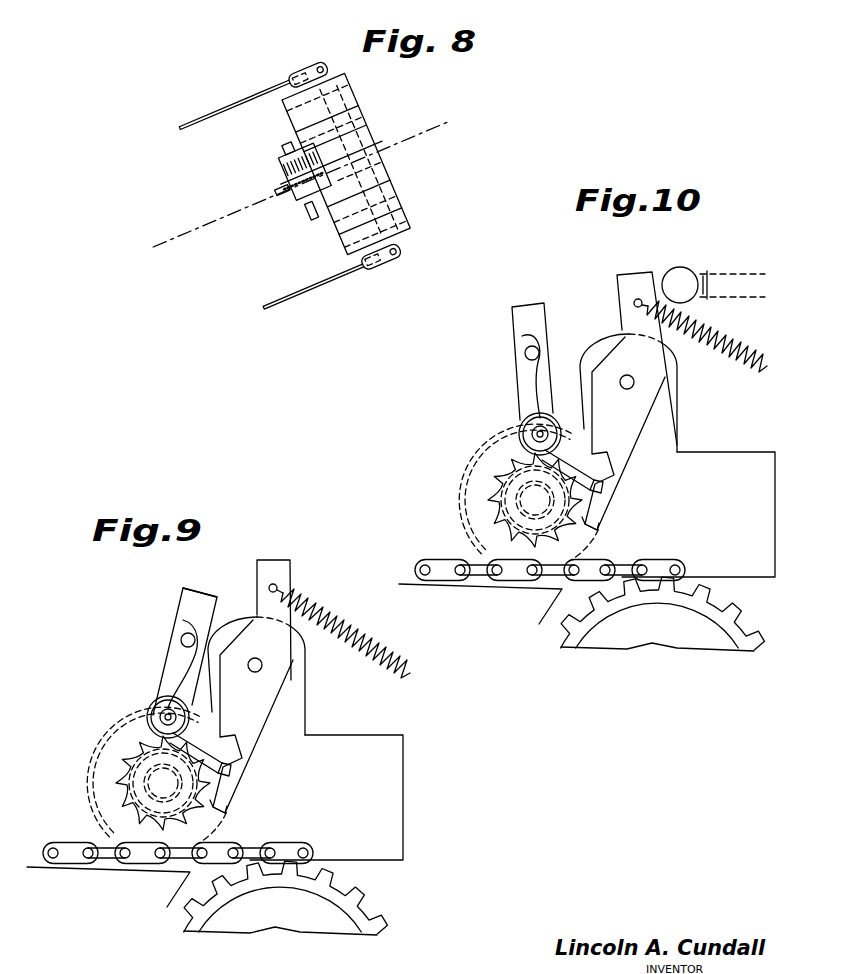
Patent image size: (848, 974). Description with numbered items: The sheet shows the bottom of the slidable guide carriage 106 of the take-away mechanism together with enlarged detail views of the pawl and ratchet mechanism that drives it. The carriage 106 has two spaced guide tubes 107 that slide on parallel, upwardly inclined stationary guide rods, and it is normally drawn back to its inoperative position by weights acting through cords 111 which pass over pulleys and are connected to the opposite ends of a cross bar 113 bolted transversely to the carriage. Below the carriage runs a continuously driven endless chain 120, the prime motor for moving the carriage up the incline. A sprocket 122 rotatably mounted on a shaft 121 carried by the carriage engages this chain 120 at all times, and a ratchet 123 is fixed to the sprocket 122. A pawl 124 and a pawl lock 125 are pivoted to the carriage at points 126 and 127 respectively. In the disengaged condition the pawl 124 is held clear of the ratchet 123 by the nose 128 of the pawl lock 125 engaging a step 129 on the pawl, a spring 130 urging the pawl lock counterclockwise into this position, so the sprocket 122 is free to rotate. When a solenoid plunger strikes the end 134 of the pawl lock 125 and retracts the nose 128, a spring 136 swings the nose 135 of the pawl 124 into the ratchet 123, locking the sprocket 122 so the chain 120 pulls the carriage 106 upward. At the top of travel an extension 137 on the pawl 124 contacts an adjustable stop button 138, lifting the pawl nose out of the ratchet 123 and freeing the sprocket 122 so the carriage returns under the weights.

In FIG. 8, the guide carriage 106 is at (384, 172).
In FIG. 8, the guide tubes 107 is at (332, 74).
In FIG. 8, the cords 111 is at (205, 117).
In FIG. 8, the cross bar 113 is at (401, 253).
In FIG. 9, the endless chain 120 is at (75, 855).
In FIG. 10, the endless chain 120 is at (450, 573).
In FIG. 8, the shaft 121 is at (318, 214).
In FIG. 9, the shaft 121 is at (156, 775).
In FIG. 10, the shaft 121 is at (477, 470).
In FIG. 8, the sprocket 122 is at (278, 194).
In FIG. 9, the sprocket 122 is at (123, 862).
In FIG. 10, the sprocket 122 is at (510, 580).
In FIG. 8, the ratchet 123 is at (281, 183).
In FIG. 9, the ratchet 123 is at (130, 752).
In FIG. 10, the ratchet 123 is at (530, 500).
In FIG. 9, the pawl 124 is at (255, 742).
In FIG. 10, the pawl 124 is at (664, 412).
In FIG. 9, the pawl lock 125 is at (198, 603).
In FIG. 9, the pivot point 126 is at (259, 671).
In FIG. 10, the pivot point 126 is at (634, 386).
In FIG. 9, the pivot point 127 is at (163, 713).
In FIG. 10, the pivot point 127 is at (540, 434).
In FIG. 9, the nose 128 is at (231, 772).
In FIG. 10, the nose 128 is at (597, 457).
In FIG. 9, the step 129 is at (240, 750).
In FIG. 10, the step 129 is at (614, 466).
In FIG. 9, the spring 130 is at (183, 658).
In FIG. 10, the spring 130 is at (545, 370).
In FIG. 9, the end 134 is at (177, 613).
In FIG. 10, the end 134 is at (532, 361).
In FIG. 9, the nose 135 is at (227, 807).
In FIG. 10, the nose 135 is at (603, 520).
In FIG. 9, the spring 136 is at (333, 607).
In FIG. 10, the spring 136 is at (708, 318).
In FIG. 9, the extension 137 is at (266, 571).
In FIG. 10, the extension 137 is at (622, 287).
In FIG. 10, the adjustable stop button 138 is at (679, 268).